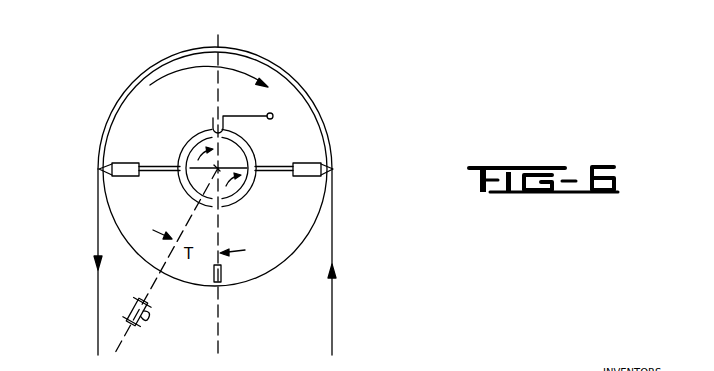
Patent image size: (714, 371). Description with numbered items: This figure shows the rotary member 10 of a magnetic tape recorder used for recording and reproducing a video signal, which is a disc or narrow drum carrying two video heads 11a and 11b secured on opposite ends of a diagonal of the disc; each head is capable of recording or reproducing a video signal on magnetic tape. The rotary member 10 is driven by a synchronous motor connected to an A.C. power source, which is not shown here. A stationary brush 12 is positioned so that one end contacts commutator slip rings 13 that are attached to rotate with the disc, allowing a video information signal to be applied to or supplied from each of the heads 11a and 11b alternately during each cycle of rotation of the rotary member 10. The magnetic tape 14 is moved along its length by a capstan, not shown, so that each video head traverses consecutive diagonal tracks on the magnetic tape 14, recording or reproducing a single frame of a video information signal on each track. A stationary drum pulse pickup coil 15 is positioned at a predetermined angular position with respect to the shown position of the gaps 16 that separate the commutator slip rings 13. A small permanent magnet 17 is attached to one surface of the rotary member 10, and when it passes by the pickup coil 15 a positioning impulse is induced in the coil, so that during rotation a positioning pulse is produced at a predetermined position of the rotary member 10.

The rotary member 10 is at (150, 90).
The video head 11a is at (128, 163).
The video head 11b is at (310, 162).
The stationary brush 12 is at (263, 107).
The commutator slip rings 13 is at (182, 200).
The magnetic tape 14 is at (338, 248).
The stationary drum pulse pickup coil 15 is at (140, 326).
The gaps 16 is at (212, 138).
The small permanent magnet 17 is at (222, 269).